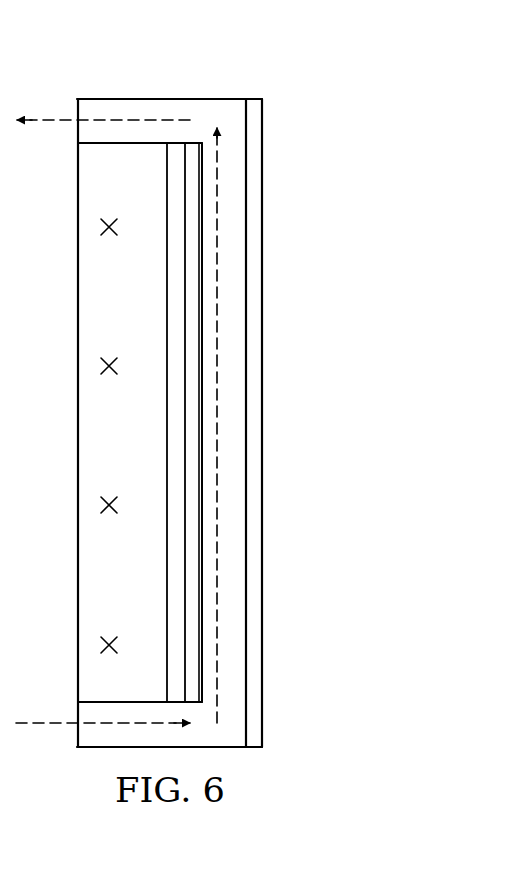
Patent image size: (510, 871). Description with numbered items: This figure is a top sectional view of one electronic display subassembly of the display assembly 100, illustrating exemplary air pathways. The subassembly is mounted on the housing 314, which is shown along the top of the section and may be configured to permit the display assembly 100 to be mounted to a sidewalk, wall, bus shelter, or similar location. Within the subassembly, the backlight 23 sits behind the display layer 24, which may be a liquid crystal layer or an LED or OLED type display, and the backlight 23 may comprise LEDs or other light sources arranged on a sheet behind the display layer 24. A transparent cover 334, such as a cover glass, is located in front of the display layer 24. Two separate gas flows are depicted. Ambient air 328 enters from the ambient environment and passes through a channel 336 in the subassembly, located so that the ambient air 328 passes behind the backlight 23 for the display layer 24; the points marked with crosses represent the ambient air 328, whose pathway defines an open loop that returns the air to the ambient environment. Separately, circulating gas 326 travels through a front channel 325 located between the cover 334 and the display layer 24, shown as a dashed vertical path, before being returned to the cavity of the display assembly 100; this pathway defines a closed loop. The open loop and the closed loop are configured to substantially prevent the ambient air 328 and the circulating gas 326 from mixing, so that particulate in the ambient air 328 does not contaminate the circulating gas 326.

The display assembly 100 is at (174, 379).
The housing 314 is at (152, 98).
The cover 334 is at (254, 284).
The front channel 325 is at (226, 392).
The circulating gas 326 is at (218, 200).
The channel 336 is at (108, 322).
The display layer 24 is at (193, 428).
The backlight 23 is at (175, 587).
The ambient air 328 is at (100, 222).